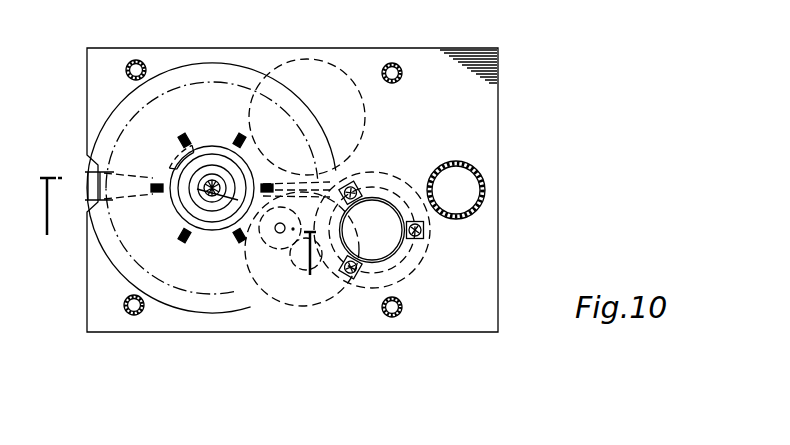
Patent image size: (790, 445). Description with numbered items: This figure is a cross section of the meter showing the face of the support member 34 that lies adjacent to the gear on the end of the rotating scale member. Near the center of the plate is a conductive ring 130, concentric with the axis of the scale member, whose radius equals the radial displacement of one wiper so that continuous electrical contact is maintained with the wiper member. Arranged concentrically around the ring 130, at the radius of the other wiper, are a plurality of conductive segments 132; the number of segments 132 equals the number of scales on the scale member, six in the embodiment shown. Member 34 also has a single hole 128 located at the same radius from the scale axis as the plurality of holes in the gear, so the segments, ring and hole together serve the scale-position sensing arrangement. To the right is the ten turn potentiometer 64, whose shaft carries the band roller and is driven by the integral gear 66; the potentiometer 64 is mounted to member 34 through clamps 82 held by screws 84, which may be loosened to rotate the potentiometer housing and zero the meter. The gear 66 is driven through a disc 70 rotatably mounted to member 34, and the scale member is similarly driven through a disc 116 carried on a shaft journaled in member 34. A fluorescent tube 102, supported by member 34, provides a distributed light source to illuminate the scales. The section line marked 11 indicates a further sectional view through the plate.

The member 34 is at (480, 118).
The conductive ring 130 is at (215, 147).
The conductive segments 132 is at (187, 136).
The clamps 82 is at (136, 60).
The screws 84 is at (395, 63).
The disc 116 is at (318, 68).
The gear 66 is at (396, 172).
The ten turn potentiometer 64 is at (390, 246).
The fluorescent tube 102 is at (484, 182).
The hole 128 is at (279, 233).
The disc 70 is at (312, 307).
The section line 11 is at (177, 218).